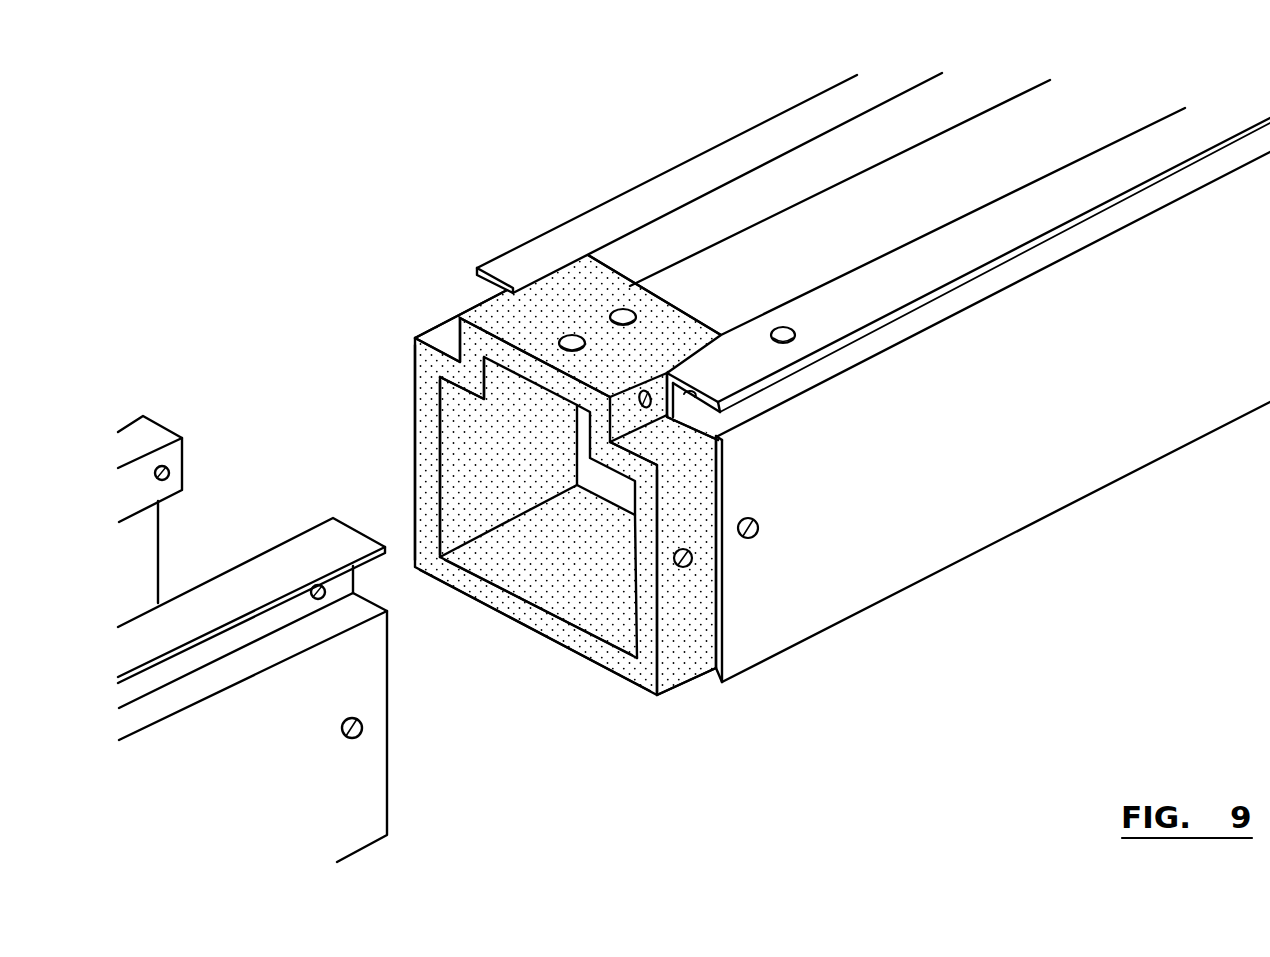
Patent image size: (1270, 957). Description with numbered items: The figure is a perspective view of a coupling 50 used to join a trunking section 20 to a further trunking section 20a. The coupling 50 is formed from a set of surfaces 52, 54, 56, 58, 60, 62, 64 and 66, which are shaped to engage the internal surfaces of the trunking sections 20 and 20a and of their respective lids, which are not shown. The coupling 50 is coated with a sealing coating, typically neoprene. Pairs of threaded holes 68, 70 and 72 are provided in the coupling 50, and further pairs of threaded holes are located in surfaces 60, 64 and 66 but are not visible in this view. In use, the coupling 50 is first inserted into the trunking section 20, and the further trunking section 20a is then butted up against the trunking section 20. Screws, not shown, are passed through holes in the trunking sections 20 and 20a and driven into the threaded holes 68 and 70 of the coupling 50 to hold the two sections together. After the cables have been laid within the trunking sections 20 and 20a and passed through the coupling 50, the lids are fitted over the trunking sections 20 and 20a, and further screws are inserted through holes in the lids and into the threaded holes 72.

The trunking section 20 is at (913, 602).
The further trunking section 20a is at (400, 768).
The coupling 50 is at (556, 662).
The surface 52 is at (678, 662).
The surface 54 is at (665, 443).
The surface 56 is at (708, 322).
The surface 58 is at (575, 285).
The surface 60 is at (450, 336).
The surface 62 is at (447, 338).
The surface 64 is at (413, 430).
The surface 66 is at (498, 613).
The threaded holes 68 is at (692, 562).
The threaded holes 70 is at (645, 396).
The threaded holes 72 is at (571, 333).